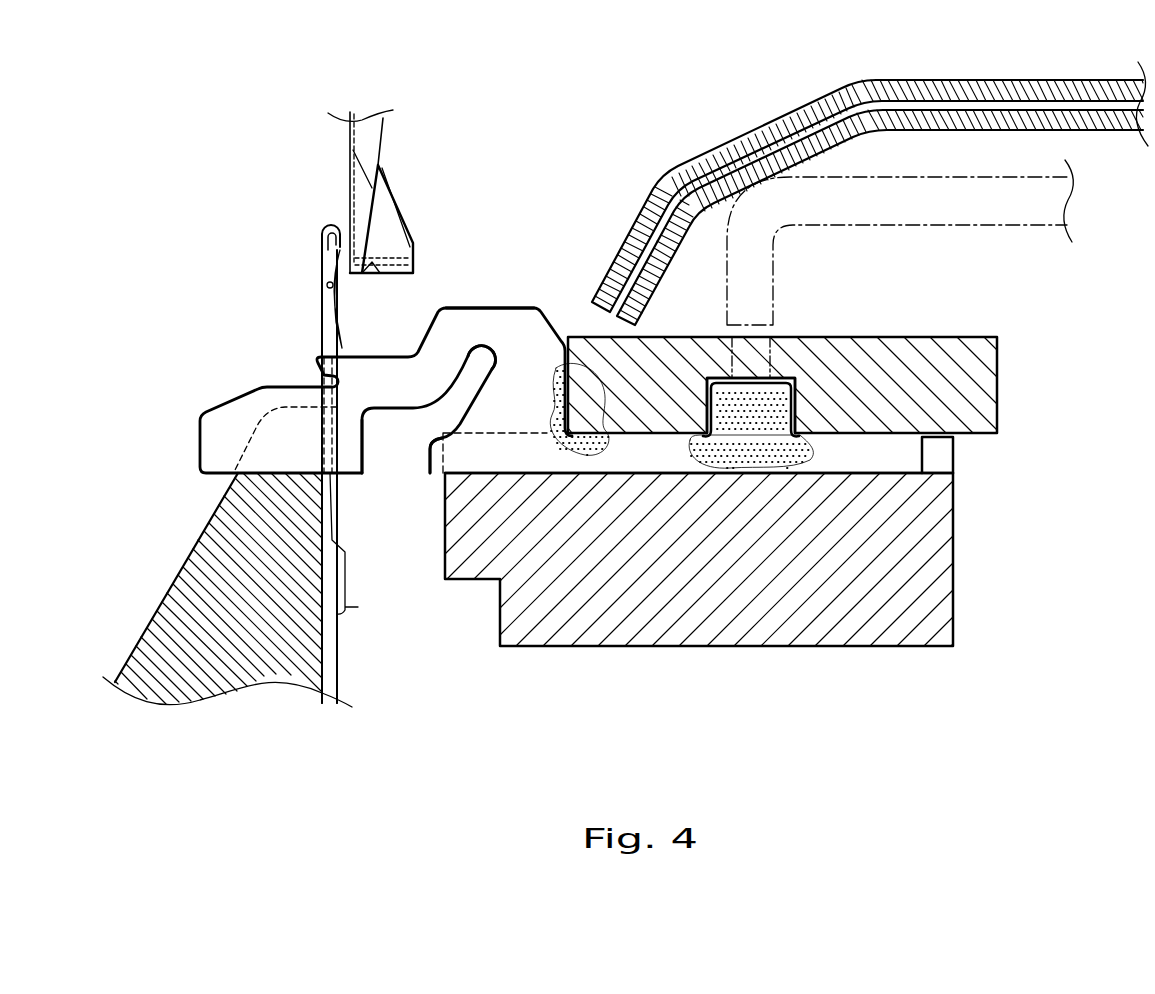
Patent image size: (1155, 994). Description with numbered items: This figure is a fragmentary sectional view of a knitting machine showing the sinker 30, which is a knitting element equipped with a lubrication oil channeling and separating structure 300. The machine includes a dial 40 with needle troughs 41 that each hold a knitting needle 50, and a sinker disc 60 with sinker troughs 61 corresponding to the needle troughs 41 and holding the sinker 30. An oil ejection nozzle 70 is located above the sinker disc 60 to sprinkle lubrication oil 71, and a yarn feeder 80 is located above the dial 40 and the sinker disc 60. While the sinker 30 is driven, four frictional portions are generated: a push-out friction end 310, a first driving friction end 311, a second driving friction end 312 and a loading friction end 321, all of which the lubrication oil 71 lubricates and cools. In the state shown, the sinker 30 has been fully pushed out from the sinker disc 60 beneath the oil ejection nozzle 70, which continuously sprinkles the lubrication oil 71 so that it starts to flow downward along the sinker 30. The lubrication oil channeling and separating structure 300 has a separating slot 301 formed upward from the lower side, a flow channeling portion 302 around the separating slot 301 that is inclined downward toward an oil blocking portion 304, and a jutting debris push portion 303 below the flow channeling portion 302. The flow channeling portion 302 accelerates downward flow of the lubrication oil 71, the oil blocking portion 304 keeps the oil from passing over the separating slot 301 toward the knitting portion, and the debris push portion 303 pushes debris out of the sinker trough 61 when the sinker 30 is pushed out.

The sinker 30 is at (206, 378).
The lubrication oil channeling and separating structure 300 is at (472, 298).
The separating slot 301 is at (462, 430).
The flow channeling portion 302 is at (475, 400).
The debris push portion 303 is at (430, 457).
The oil blocking portion 304 is at (367, 443).
The dial 40 is at (173, 577).
The needle trough 41 is at (333, 658).
The knitting needle 50 is at (322, 237).
The sinker disc 60 is at (908, 647).
The sinker trough 61 is at (940, 452).
The loading friction end 321 is at (722, 473).
The oil ejection nozzle 70 is at (630, 228).
The lubrication oil 71 is at (553, 385).
The yarn feeder 80 is at (396, 200).
The push-out friction end 310 is at (583, 337).
The first driving friction end 311 is at (697, 392).
The second driving friction end 312 is at (800, 417).